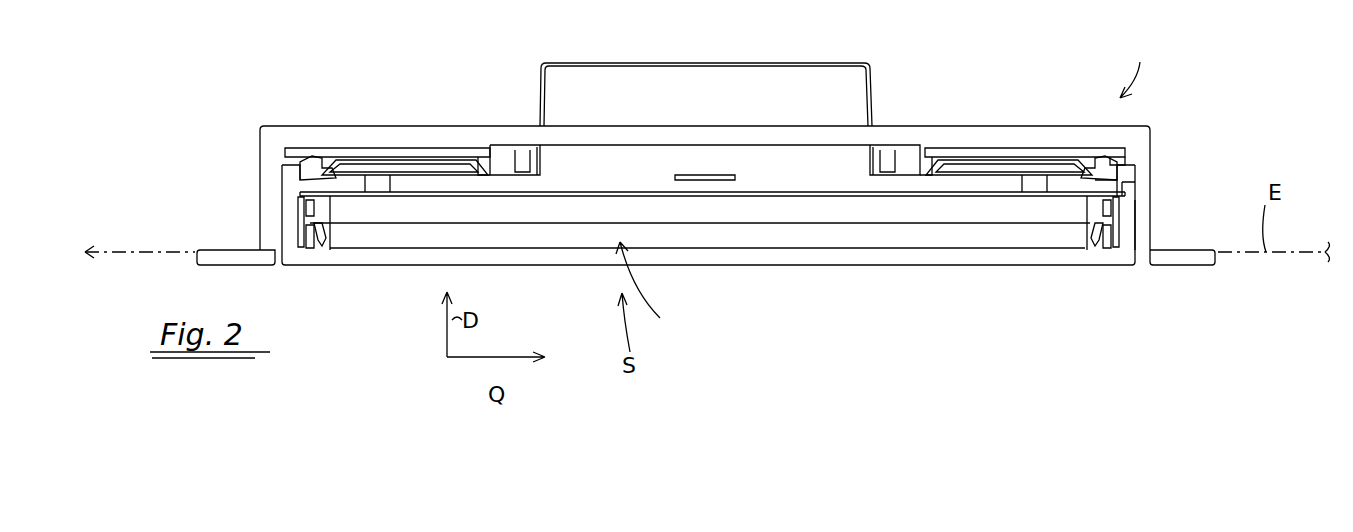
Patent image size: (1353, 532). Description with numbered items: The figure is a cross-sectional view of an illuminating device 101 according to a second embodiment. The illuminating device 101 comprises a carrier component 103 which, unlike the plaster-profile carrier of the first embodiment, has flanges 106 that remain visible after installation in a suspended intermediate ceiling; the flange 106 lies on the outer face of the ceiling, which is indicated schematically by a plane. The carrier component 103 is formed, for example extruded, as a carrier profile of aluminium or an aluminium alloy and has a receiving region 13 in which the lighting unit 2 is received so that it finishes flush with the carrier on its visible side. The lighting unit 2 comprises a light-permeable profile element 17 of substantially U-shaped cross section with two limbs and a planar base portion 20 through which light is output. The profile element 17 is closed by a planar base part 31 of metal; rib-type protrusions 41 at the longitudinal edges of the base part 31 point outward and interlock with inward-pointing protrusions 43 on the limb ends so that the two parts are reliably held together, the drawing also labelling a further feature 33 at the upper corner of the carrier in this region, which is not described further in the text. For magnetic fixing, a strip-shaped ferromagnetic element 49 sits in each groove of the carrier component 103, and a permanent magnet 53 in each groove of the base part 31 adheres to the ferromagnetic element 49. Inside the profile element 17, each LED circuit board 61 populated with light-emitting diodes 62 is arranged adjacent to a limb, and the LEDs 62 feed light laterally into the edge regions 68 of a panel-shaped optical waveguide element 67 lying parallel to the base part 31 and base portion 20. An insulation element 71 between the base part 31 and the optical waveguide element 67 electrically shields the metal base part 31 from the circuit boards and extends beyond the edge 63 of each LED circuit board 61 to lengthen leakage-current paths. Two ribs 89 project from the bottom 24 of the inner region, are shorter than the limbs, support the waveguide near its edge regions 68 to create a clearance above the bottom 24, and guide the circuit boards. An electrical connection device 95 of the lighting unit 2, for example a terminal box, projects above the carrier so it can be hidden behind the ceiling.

The lighting unit 2 is at (733, 290).
The receiving region 13 is at (1145, 236).
The profile element 17 is at (875, 255).
The base portion 20 is at (680, 265).
The bottom 24 is at (655, 296).
The planar base part 31 is at (550, 180).
The hook element 33 is at (1130, 165).
The rib-type protrusion 41 is at (350, 194).
The protrusion 43 is at (296, 170).
The ferromagnetic element 49 is at (405, 150).
The permanent magnet 53 is at (425, 165).
The LED circuit board 61 is at (300, 228).
The light-emitting diode 62 is at (306, 206).
The edge 63 is at (1135, 186).
The optical waveguide element 67 is at (985, 215).
The edge region 68 is at (312, 250).
The insulation element 71 is at (820, 197).
The rib 89 is at (320, 232).
The electrical connection device 95 is at (781, 85).
The illuminating device 101 is at (1160, 69).
The carrier component 103 is at (1150, 190).
The flange 106 is at (237, 258).